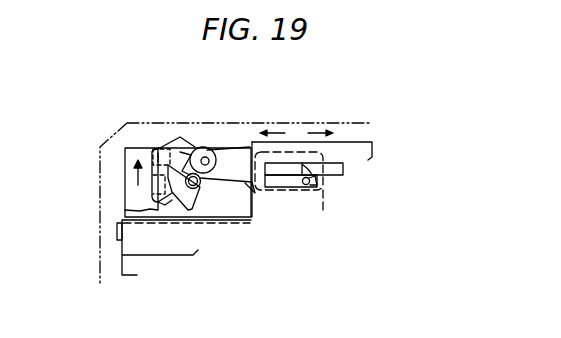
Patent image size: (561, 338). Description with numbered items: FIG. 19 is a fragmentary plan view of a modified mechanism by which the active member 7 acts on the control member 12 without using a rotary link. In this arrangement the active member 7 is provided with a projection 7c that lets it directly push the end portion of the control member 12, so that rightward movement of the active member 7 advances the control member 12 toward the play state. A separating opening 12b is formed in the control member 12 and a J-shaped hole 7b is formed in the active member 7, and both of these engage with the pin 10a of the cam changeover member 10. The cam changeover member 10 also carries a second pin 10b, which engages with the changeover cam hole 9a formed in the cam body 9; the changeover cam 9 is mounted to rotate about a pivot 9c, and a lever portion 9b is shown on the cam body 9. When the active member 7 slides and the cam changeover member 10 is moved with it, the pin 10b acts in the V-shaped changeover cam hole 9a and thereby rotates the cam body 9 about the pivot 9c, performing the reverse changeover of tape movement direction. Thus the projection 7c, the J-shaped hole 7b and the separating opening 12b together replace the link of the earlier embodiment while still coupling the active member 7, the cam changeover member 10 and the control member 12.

The active member 7 is at (212, 223).
The J-shaped hole 7b is at (300, 173).
The projection 7c is at (115, 232).
The changeover cam 9 is at (180, 140).
The changeover cam hole 9a is at (172, 207).
The engaging lever 9b is at (196, 184).
The pivot 9c is at (162, 152).
The cam changeover member 10 is at (235, 183).
The pin 10a is at (315, 185).
The pin 10b is at (208, 158).
The control member 12 is at (343, 147).
The separating opening 12b is at (345, 172).